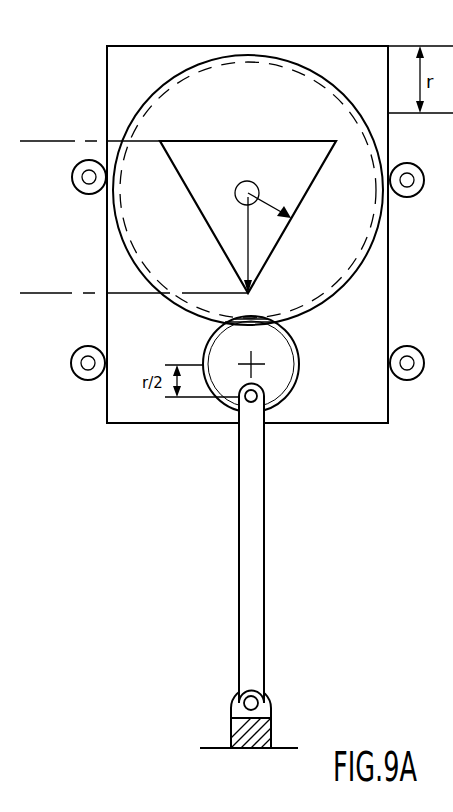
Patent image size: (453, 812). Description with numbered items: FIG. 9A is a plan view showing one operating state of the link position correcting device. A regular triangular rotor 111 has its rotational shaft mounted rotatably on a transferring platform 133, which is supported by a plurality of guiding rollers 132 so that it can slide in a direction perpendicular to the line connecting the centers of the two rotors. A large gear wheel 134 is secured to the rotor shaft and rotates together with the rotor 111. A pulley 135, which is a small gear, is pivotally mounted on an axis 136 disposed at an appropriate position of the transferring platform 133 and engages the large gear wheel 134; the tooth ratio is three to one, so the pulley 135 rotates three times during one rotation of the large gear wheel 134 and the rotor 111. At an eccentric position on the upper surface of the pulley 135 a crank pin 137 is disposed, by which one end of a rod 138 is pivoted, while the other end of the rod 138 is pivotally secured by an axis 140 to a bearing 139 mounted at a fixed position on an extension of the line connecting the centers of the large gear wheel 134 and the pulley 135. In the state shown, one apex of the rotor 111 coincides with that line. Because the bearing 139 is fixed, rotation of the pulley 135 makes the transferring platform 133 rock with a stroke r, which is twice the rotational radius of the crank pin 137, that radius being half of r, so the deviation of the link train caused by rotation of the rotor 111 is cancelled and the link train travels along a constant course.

The rotor 111 is at (130, 123).
The guiding rollers 132 is at (90, 195).
The transferring platform 133 is at (295, 425).
The large gear wheel 134 is at (296, 60).
The pulley 135 is at (205, 352).
The axis 136 is at (258, 362).
The crank pin 137 is at (258, 392).
The rod 138 is at (255, 480).
The bearing 139 is at (271, 713).
The axis 140 is at (257, 699).